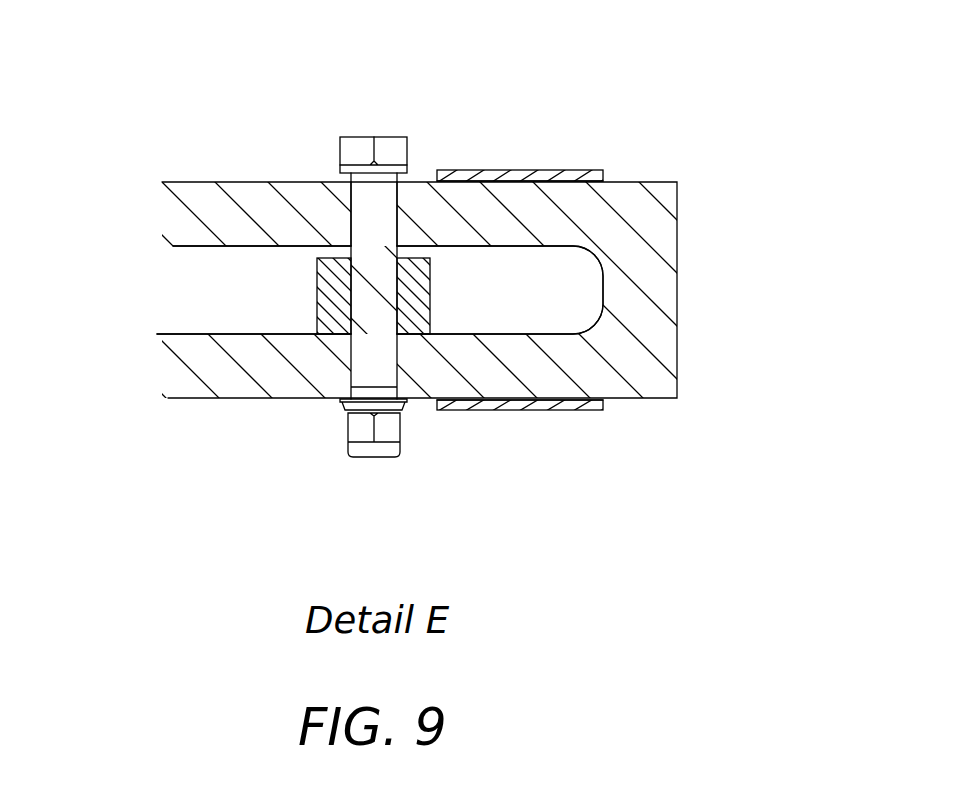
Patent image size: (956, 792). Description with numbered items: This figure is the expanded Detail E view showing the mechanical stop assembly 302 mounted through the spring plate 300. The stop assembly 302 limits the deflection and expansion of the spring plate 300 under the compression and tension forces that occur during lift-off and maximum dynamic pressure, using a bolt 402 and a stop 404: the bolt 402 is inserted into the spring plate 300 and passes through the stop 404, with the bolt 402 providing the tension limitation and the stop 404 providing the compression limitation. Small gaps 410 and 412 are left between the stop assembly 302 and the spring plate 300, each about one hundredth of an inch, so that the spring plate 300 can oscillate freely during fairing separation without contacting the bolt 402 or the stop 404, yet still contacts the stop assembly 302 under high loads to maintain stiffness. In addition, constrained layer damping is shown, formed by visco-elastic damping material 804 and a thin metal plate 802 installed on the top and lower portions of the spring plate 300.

The spring plate 300 is at (677, 298).
The mechanical stop assembly 302 is at (363, 248).
The bolt 402 is at (352, 110).
The stop 404 is at (423, 315).
The gap 410 is at (333, 253).
The gap 412 is at (345, 180).
The thin metal plate 802 is at (527, 172).
The visco-elastic damping material 804 is at (604, 177).